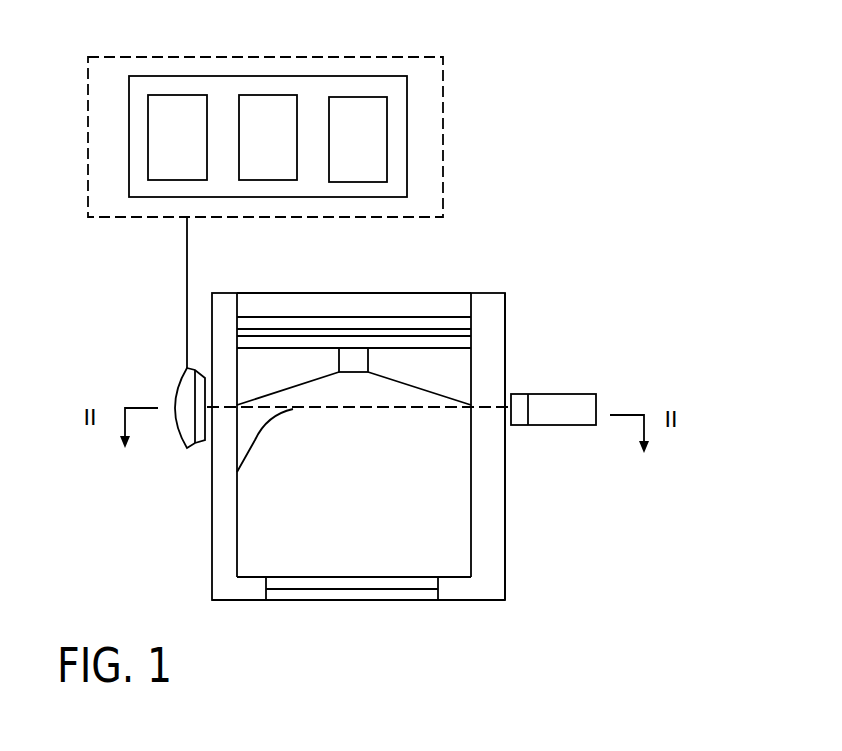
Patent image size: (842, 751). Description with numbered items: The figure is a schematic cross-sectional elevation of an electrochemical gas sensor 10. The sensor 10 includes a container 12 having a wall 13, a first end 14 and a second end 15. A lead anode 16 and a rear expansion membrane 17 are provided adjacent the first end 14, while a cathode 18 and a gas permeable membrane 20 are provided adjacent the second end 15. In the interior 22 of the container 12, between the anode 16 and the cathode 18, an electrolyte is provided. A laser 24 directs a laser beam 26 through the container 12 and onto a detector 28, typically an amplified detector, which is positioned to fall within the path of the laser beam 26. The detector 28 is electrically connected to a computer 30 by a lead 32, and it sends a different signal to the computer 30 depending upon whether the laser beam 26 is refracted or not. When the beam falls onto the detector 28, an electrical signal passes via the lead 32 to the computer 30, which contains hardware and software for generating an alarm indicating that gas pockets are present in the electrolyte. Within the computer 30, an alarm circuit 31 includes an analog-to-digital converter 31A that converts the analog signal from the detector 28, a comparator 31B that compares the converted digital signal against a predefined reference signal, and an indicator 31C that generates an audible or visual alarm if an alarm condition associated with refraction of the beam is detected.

The electrochemical sensor 10 is at (567, 268).
The container 12 is at (488, 587).
The wall 13 is at (490, 511).
The first end 14 is at (352, 287).
The second end 15 is at (458, 620).
The lead anode 16 is at (458, 380).
The rear expansion membrane 17 is at (438, 337).
The cathode 18 is at (378, 582).
The gas permeable membrane 20 is at (317, 593).
The interior 22 is at (430, 455).
The laser 24 is at (583, 394).
The laser beam 26 is at (237, 472).
The detector 28 is at (175, 387).
The computer 30 is at (452, 152).
The alarm circuit 31 is at (132, 84).
The analog-to-digital converter 31A is at (184, 100).
The comparator 31B is at (284, 100).
The indicator 31C is at (377, 105).
The lead 32 is at (188, 264).